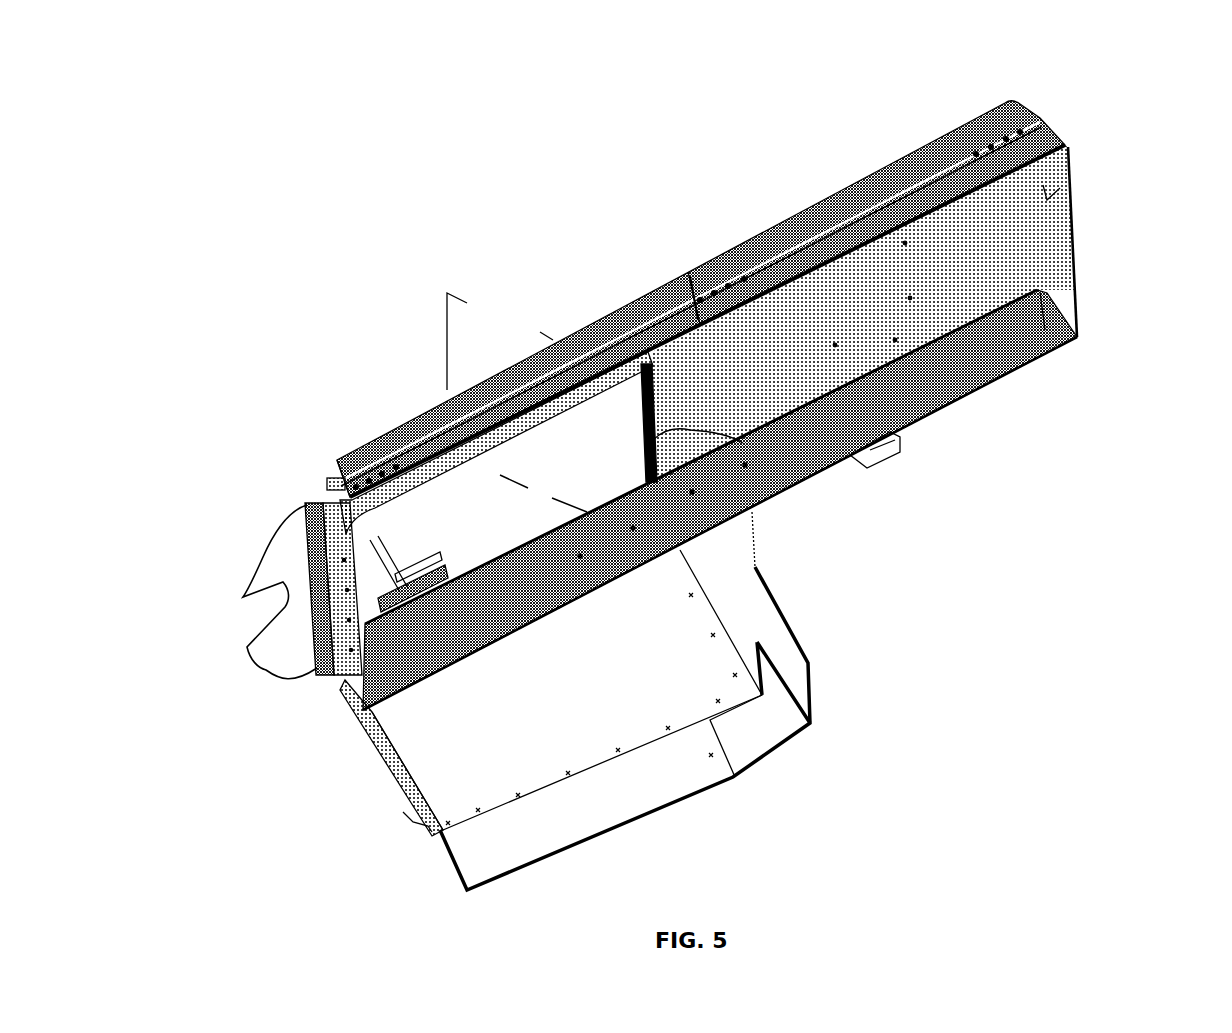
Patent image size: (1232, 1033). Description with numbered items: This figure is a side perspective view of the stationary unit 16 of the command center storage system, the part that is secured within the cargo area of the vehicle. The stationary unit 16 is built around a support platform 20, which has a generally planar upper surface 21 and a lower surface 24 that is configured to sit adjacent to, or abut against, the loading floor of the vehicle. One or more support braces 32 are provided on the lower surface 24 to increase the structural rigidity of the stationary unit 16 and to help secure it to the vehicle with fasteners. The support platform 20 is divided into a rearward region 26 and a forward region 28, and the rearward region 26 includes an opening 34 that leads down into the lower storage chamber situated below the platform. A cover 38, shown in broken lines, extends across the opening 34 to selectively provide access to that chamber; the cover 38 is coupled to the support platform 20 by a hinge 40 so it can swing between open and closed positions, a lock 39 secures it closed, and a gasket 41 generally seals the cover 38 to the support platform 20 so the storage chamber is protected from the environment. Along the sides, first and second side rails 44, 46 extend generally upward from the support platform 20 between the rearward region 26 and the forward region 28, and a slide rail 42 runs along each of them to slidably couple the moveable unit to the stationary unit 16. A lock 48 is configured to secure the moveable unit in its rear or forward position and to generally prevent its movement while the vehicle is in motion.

The stationary unit 16 is at (268, 62).
The support platform 20 is at (1076, 236).
The upper surface 21 is at (1070, 157).
The lower surface 24 is at (1080, 287).
The rearward region 26 is at (647, 203).
The forward region 28 is at (993, 57).
The support brace 32 is at (887, 470).
The opening 34 is at (790, 493).
The cover 38 is at (518, 324).
The lock 39 is at (307, 503).
The hinge 40 is at (667, 280).
The gasket 41 is at (397, 420).
The slide rail 42 is at (340, 455).
The first side rail 44 is at (1050, 118).
The second side rail 46 is at (1048, 353).
The lock 48 is at (257, 677).